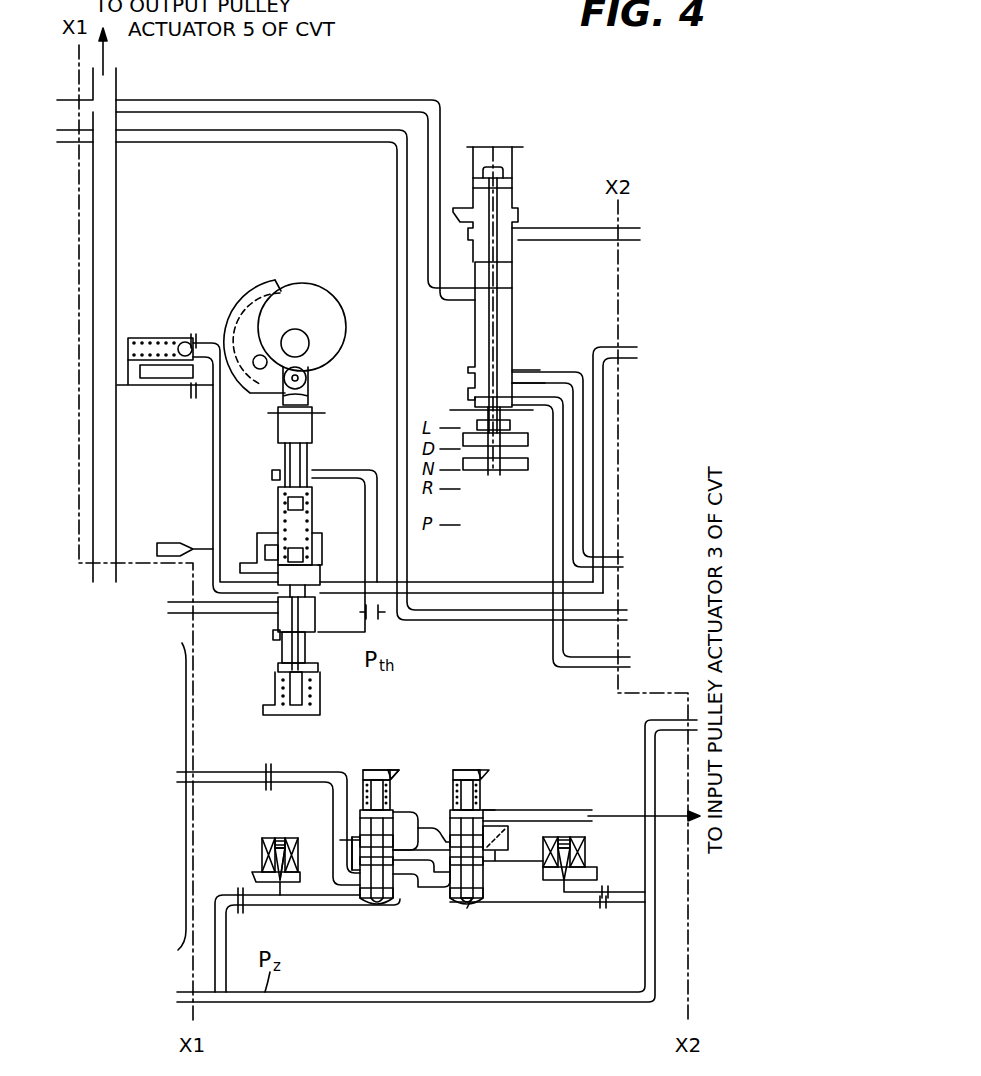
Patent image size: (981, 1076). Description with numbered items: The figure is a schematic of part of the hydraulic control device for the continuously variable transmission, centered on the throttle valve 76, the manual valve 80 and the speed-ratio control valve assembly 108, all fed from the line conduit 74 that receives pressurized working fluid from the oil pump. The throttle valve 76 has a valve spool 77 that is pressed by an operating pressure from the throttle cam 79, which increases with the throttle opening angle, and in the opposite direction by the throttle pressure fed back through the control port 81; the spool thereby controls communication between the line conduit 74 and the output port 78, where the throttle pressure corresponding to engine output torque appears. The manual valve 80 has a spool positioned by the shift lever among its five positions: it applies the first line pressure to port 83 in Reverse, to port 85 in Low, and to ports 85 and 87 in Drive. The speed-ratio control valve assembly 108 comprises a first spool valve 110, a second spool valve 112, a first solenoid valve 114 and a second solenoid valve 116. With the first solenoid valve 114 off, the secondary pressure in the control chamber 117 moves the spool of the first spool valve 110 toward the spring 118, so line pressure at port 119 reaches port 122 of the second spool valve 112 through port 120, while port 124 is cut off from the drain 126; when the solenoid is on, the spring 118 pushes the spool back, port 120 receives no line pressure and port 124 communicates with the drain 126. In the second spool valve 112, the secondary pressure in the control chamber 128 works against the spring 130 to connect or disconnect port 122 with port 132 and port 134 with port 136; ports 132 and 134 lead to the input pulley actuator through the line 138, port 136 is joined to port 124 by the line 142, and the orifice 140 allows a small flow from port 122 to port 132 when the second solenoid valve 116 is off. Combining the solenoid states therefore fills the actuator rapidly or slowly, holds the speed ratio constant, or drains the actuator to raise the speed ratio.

The line conduit 74 is at (118, 288).
The throttle valve 76 is at (320, 266).
The valve spool 77 is at (278, 622).
The output port 78 is at (320, 592).
The throttle cam 79 is at (330, 312).
The manual valve 80 is at (514, 128).
The control port 81 is at (322, 642).
The port 83 is at (522, 230).
The port 85 is at (522, 366).
The port 87 is at (535, 372).
The speed-ratio control valve assembly 108 is at (414, 748).
The first spool valve 110 is at (367, 917).
The second spool valve 112 is at (504, 914).
The first solenoid valve 114 is at (272, 838).
The second solenoid valve 116 is at (586, 852).
The control chamber 117 is at (378, 907).
The spring 118 is at (365, 772).
The port 119 is at (356, 878).
The port 120 is at (405, 866).
The port 122 is at (445, 835).
The port 124 is at (395, 776).
The drain 126 is at (340, 840).
The control chamber 128 is at (256, 875).
The spring 130 is at (476, 770).
The port 132 is at (490, 812).
The port 134 is at (490, 866).
The port 136 is at (456, 906).
The line 138 is at (582, 810).
The orifice 140 is at (508, 826).
The line 142 is at (418, 815).